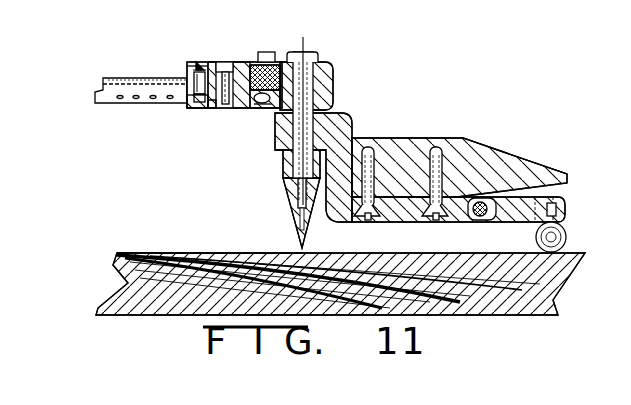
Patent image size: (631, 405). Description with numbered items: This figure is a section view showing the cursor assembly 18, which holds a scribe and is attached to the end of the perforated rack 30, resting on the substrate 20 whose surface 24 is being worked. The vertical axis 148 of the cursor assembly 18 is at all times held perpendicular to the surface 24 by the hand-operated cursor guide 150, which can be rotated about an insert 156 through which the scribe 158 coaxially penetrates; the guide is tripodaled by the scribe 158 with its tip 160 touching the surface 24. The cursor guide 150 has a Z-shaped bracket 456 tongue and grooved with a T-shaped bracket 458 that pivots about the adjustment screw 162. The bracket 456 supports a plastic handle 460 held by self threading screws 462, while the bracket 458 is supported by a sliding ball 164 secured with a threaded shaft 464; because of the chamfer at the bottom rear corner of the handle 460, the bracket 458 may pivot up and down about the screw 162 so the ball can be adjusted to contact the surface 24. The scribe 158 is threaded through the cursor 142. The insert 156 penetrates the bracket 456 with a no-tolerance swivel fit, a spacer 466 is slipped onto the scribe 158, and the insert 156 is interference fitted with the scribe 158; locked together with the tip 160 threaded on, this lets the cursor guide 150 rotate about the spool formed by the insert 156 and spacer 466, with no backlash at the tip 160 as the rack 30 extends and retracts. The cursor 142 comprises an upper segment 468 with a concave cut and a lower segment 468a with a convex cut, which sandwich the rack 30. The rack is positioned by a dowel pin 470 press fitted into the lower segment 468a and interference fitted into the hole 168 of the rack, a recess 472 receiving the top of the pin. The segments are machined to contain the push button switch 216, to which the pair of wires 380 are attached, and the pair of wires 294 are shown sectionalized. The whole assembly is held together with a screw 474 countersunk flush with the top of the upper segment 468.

The cursor assembly 18 is at (460, 81).
The substrate 20 is at (105, 296).
The surface 24 is at (158, 253).
The rack 30 is at (104, 104).
The cursor 142 is at (334, 78).
The vertical axis 148 is at (305, 38).
The cursor guide 150 is at (549, 151).
The insert 156 is at (282, 168).
The scribe 158 is at (320, 57).
The tip 160 is at (288, 212).
The adjustment screw 162 is at (487, 218).
The sliding ball 164 is at (563, 250).
The hole 168 is at (198, 108).
The push button switch 216 is at (266, 52).
The pair of wires 294 is at (240, 108).
The pair of wires 380 is at (270, 110).
The Z-shaped bracket 456 is at (356, 130).
The T-shaped bracket 458 is at (565, 195).
The plastic handle 460 is at (492, 138).
The self threading screws 462 is at (360, 228).
The threaded shafts 464 is at (570, 206).
The spacer 466 is at (330, 114).
The upper segment 468 is at (190, 68).
The lower segment 468a is at (208, 110).
The dowel pin 470 is at (196, 88).
The recess 472 is at (206, 66).
The screw 474 is at (228, 62).